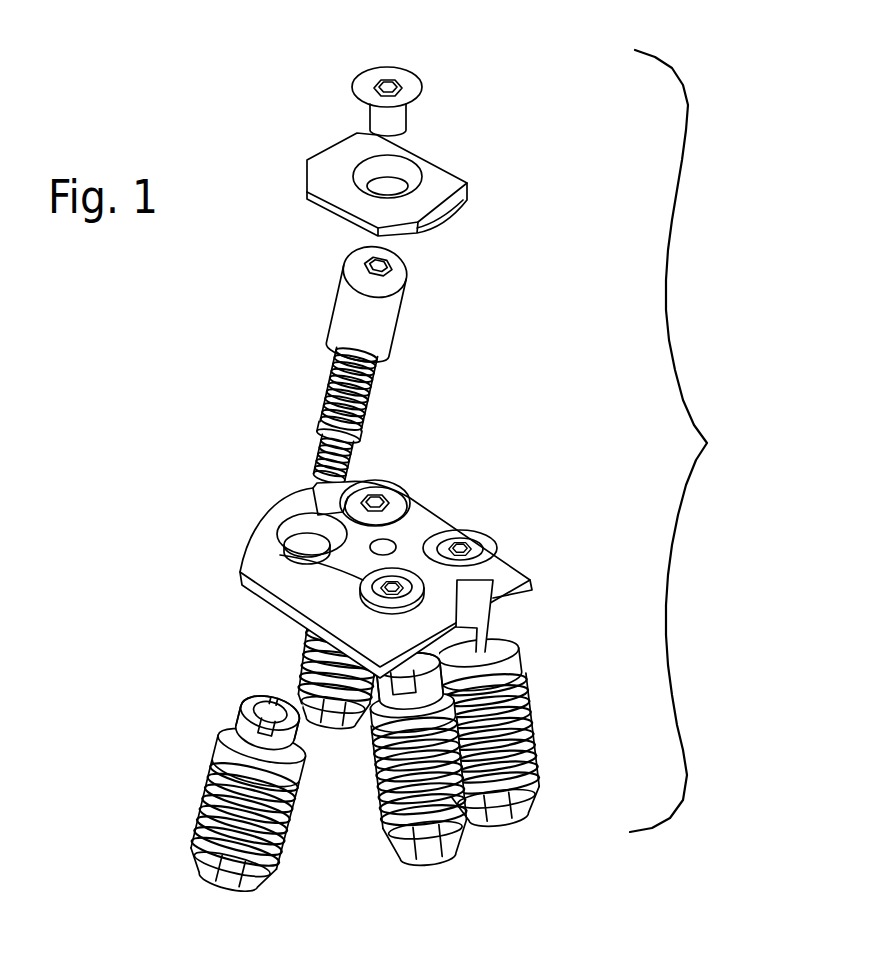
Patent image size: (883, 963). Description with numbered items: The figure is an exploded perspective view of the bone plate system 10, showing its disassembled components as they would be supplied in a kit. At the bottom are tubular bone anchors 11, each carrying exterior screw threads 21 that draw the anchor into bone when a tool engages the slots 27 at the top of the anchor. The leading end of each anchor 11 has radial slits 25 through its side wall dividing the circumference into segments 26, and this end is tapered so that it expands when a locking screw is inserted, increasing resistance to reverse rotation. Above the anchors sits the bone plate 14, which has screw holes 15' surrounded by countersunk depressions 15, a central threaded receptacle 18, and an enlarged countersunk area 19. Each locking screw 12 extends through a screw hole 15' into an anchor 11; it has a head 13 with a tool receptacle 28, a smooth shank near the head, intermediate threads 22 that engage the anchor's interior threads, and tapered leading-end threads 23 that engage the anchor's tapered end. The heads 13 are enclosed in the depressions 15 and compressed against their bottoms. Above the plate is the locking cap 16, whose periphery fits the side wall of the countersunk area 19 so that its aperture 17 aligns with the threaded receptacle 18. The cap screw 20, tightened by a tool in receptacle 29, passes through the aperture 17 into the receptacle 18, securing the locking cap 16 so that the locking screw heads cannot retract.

The bone fixation assembly 10 is at (707, 442).
The bone anchor 11 is at (520, 723).
The locking screw 12 is at (378, 327).
The head 13 is at (397, 273).
The bone plate 14 is at (265, 567).
The countersunk depression 15 is at (279, 517).
The screw hole 15' is at (266, 538).
The locking cap 16 is at (335, 172).
The aperture 17 is at (408, 173).
The threaded receptacle 18 is at (390, 548).
The countersunk area 19 is at (348, 562).
The cap screw 20 is at (357, 87).
The exterior screw threads 21 is at (393, 773).
The threads 22 is at (335, 370).
The threads 23 is at (322, 453).
The radial slits 25 is at (447, 850).
The segments 26 is at (510, 805).
The slots 27 is at (265, 703).
The receptacle 28 is at (377, 500).
The receptacle 29 is at (388, 90).